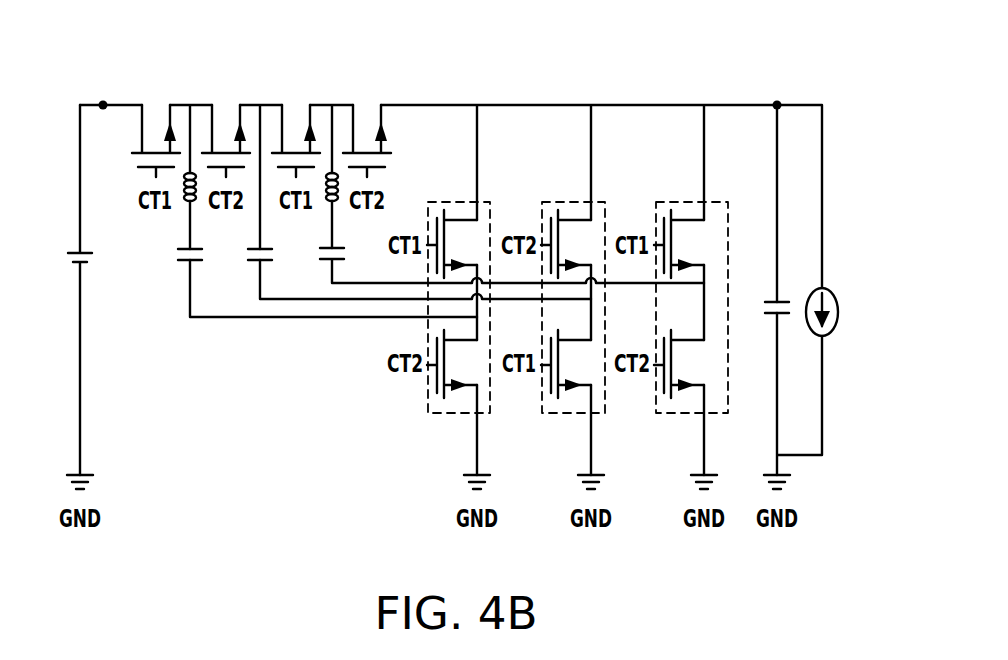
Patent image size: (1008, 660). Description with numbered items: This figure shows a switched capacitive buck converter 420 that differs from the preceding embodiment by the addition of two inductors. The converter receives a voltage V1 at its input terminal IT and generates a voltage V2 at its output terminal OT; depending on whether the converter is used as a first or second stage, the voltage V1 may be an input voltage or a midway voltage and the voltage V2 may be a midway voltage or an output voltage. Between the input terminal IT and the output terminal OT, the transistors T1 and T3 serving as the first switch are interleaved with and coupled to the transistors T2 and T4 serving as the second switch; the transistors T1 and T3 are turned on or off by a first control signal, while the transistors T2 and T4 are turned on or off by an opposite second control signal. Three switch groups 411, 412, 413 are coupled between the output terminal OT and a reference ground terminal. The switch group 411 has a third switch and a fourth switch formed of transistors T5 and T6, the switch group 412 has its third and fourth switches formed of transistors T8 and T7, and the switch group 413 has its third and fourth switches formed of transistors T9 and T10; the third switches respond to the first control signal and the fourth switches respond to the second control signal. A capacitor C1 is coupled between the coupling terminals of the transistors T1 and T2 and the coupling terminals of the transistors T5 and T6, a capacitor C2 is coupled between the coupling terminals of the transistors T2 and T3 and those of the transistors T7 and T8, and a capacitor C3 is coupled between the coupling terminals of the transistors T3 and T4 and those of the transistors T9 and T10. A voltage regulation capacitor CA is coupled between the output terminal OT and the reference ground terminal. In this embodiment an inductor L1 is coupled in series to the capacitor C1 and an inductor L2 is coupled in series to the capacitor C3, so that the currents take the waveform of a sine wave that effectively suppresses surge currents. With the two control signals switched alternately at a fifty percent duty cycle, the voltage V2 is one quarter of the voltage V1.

The switch group 411 is at (458, 274).
The switch group 412 is at (572, 274).
The switch group 413 is at (690, 274).
The switched capacitive buck converter 420 is at (856, 552).
The input terminal IT is at (103, 101).
The output terminal OT is at (777, 101).
The transistor T1 is at (155, 110).
The transistor T2 is at (225, 110).
The transistor T3 is at (296, 110).
The transistor T4 is at (366, 110).
The transistor T5 is at (454, 244).
The transistor T6 is at (454, 364).
The transistor T7 is at (568, 244).
The transistor T8 is at (568, 364).
The transistor T9 is at (681, 244).
The transistor T10 is at (685, 364).
The capacitor C1 is at (176, 258).
The capacitor C2 is at (246, 258).
The capacitor C3 is at (317, 258).
The inductor L1 is at (197, 212).
The inductor L2 is at (339, 210).
The voltage regulation capacitor CA is at (762, 309).
The voltage V1 is at (63, 290).
The voltage V2 is at (838, 312).